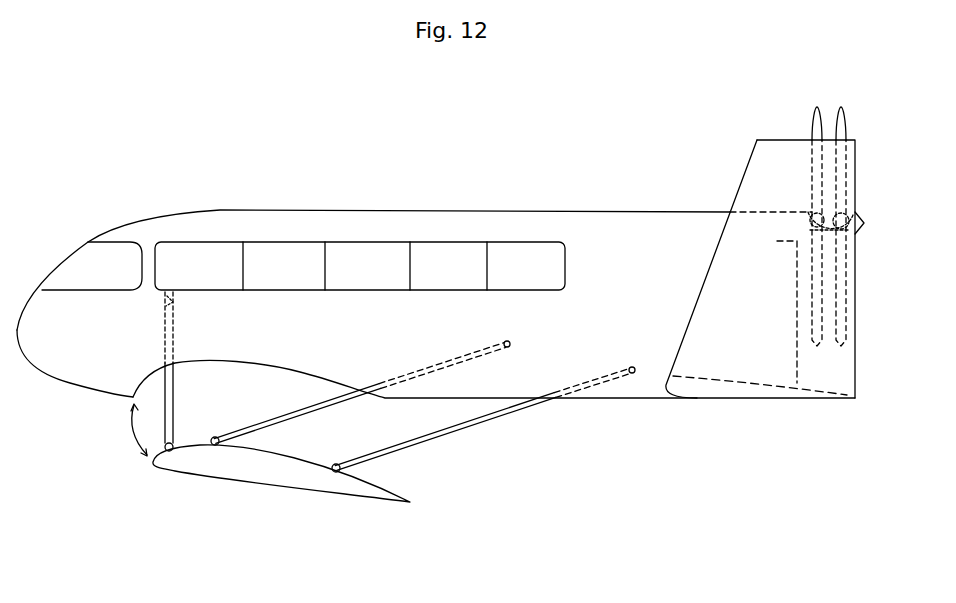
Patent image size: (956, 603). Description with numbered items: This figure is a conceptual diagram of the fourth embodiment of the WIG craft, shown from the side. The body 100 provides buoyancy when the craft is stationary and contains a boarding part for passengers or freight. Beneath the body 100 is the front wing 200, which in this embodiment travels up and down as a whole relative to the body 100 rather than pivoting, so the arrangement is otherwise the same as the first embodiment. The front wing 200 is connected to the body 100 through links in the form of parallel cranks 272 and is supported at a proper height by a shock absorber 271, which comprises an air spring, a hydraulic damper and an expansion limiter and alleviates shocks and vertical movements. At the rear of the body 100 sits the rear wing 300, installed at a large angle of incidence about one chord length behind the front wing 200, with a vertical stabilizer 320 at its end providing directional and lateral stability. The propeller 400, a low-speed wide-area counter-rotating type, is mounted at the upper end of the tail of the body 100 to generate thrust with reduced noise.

The body 100 is at (320, 220).
The front wing 200 is at (210, 464).
The shock absorber 271 is at (177, 330).
The parallel crank 272 is at (353, 402).
The rear wing 300 is at (725, 388).
The vertical stabilizer 320 is at (767, 166).
The propeller 400 is at (850, 97).